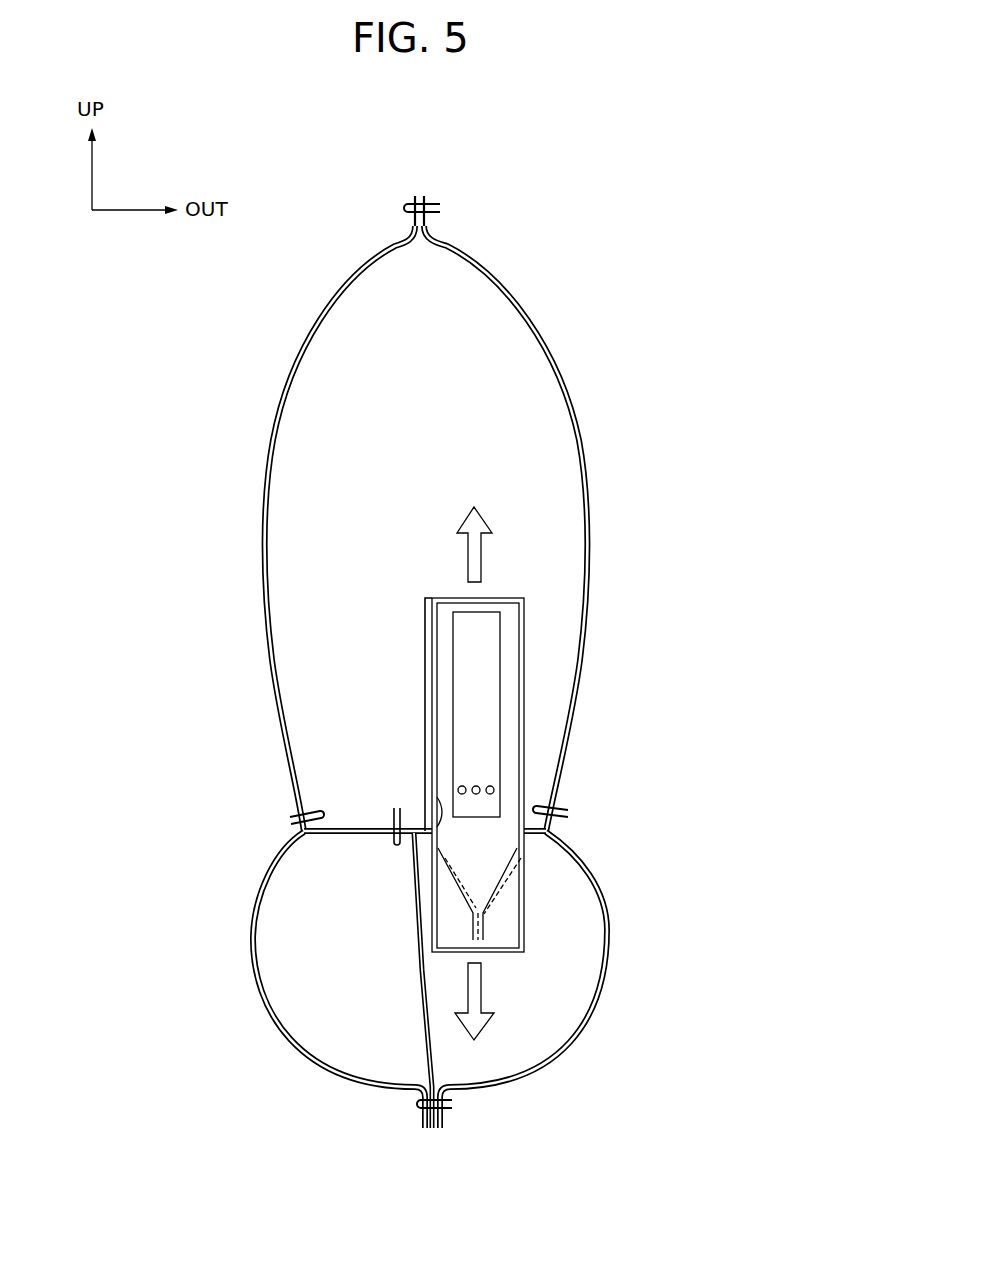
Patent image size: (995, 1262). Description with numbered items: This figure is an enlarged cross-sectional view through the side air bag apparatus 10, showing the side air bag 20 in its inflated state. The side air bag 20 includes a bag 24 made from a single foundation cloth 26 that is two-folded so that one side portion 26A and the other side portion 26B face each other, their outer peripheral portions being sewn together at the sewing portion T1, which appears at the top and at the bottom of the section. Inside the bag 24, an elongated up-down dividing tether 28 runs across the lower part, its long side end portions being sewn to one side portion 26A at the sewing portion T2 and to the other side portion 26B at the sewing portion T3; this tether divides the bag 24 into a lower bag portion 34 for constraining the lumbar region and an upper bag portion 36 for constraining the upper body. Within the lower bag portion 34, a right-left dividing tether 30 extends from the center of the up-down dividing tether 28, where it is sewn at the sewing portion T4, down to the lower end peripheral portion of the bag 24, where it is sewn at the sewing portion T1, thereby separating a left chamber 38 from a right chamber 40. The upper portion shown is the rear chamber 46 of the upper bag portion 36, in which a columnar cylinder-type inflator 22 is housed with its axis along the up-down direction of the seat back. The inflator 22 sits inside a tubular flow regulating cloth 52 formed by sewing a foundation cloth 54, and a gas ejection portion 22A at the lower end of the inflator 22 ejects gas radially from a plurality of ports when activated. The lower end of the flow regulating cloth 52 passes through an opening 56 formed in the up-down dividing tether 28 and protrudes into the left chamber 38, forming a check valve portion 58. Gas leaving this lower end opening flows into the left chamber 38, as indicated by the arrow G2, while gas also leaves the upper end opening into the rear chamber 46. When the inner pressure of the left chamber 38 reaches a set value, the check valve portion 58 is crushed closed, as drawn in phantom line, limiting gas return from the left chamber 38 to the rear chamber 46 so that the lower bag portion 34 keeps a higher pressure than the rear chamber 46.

The side air bag apparatus 10 is at (615, 158).
The side air bag 20 is at (606, 329).
The inflator 22 is at (500, 683).
The gas ejection portion 22A is at (503, 786).
The bag 24 is at (258, 583).
The foundation cloth 26 is at (394, 514).
The one side portion 26A is at (590, 456).
The other side portion 26B is at (270, 452).
The up-down dividing tether 28 is at (363, 826).
The right-left dividing tether 30 is at (427, 1041).
The lower bag portion 34 is at (604, 983).
The upper bag portion 36 is at (588, 541).
The left chamber 38 is at (583, 971).
The right chamber 40 is at (352, 989).
The rear chamber 46 is at (433, 401).
The flow regulating cloth 52 is at (299, 714).
The foundation cloth 54 is at (427, 668).
The opening 56 is at (432, 802).
The check valve portion 58 is at (505, 881).
The arrow G2 is at (467, 516).
The sewing portion T1 is at (434, 199).
The sewing portion T2 is at (572, 806).
The sewing portion T3 is at (293, 815).
The sewing portion T4 is at (393, 846).